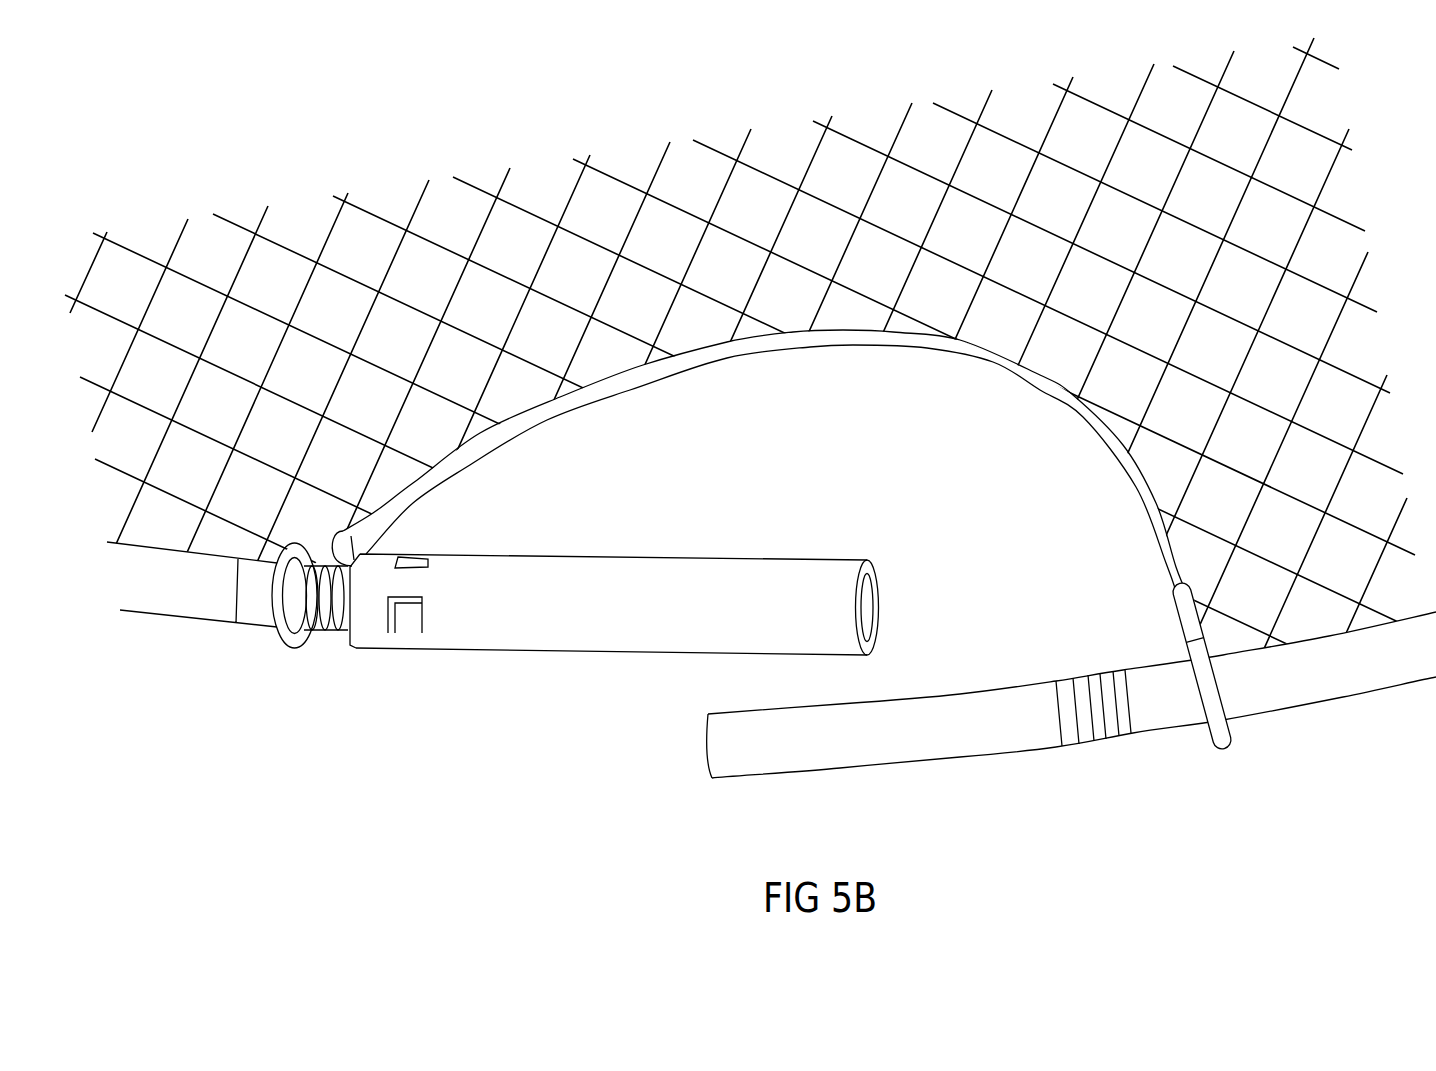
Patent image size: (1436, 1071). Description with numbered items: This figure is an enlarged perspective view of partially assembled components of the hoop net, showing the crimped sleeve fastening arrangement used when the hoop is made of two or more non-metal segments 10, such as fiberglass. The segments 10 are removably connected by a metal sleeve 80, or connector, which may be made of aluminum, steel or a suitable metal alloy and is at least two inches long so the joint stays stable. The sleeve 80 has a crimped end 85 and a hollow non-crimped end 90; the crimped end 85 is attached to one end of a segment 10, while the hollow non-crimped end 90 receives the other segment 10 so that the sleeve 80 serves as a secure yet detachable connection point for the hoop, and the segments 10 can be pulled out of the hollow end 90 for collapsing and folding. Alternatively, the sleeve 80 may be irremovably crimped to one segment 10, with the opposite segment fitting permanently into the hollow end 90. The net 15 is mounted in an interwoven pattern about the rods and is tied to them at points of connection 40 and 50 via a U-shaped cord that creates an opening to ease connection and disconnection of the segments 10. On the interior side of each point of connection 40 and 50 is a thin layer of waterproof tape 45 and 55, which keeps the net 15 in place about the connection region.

The tubular rod segment 10 is at (175, 590).
The net 15 is at (1331, 637).
The point of connection 40 is at (1221, 742).
The waterproof tape 45 is at (1083, 728).
The point of connection 50 is at (283, 627).
The waterproof tape 55 is at (333, 630).
The metal sleeve 80 is at (835, 729).
The crimped end 85 is at (614, 628).
The hollow non-crimped end 90 is at (763, 482).